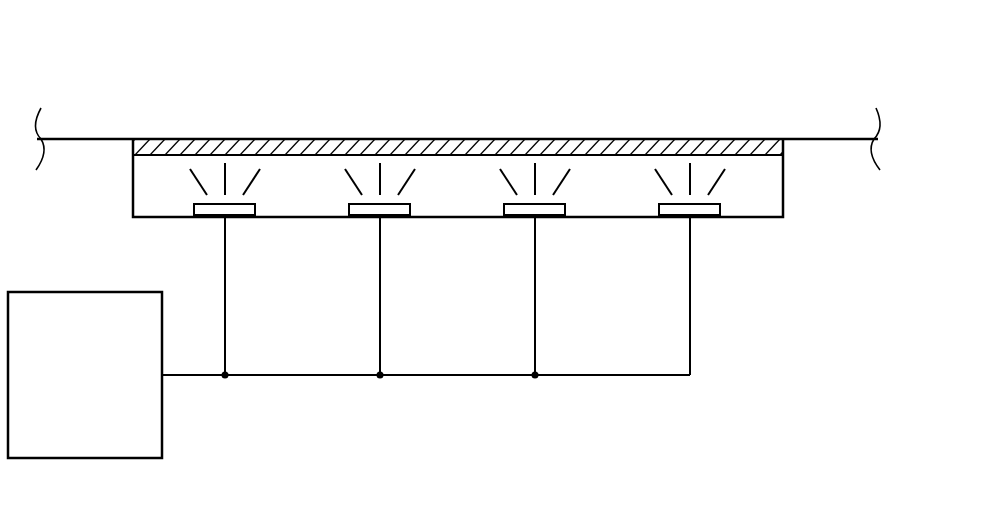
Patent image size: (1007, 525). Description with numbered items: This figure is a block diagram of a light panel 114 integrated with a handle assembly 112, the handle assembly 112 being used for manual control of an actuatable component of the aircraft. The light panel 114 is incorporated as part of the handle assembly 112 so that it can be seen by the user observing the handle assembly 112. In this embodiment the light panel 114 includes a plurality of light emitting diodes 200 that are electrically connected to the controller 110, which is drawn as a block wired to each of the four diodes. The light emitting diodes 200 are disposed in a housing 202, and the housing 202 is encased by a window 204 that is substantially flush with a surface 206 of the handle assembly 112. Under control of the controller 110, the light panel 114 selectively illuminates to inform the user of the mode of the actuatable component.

The controller 110 is at (63, 290).
The handle assembly 112 is at (100, 32).
The light panel 114 is at (797, 183).
The light emitting diodes 200 is at (210, 211).
The housing 202 is at (132, 185).
The window 204 is at (622, 146).
The surface 206 is at (830, 130).